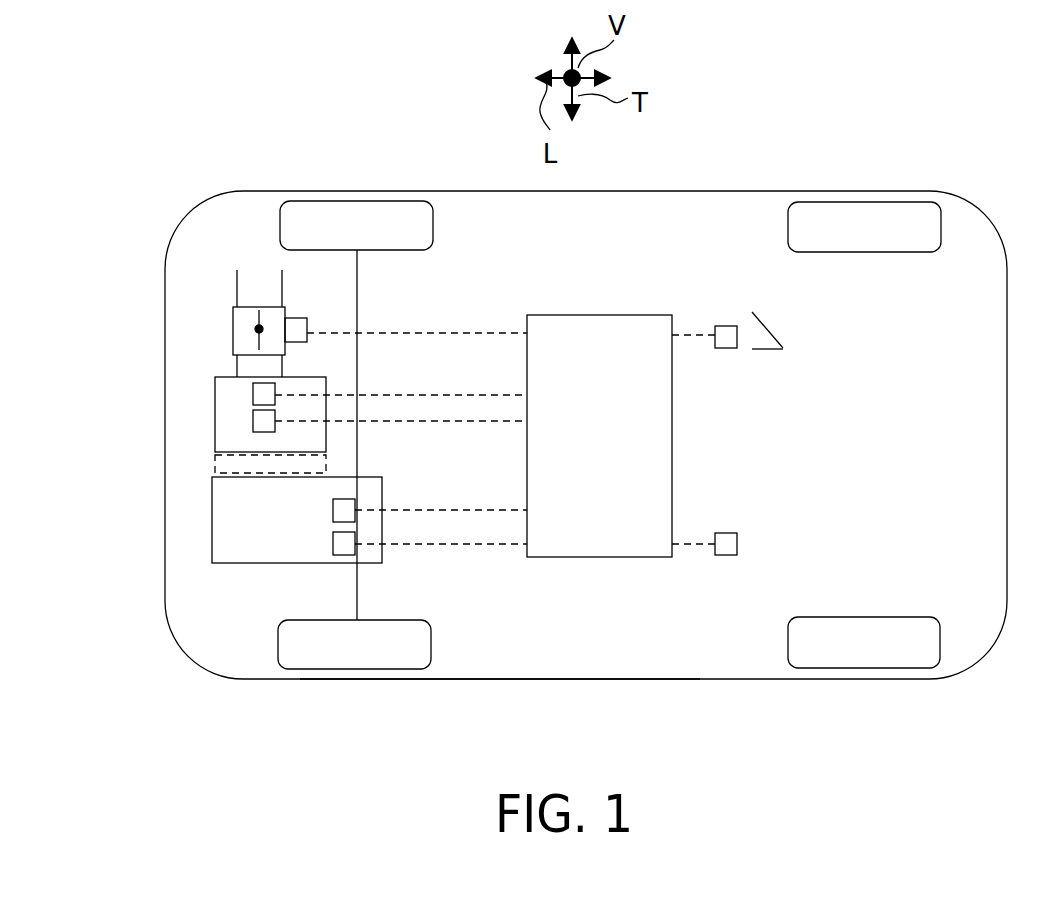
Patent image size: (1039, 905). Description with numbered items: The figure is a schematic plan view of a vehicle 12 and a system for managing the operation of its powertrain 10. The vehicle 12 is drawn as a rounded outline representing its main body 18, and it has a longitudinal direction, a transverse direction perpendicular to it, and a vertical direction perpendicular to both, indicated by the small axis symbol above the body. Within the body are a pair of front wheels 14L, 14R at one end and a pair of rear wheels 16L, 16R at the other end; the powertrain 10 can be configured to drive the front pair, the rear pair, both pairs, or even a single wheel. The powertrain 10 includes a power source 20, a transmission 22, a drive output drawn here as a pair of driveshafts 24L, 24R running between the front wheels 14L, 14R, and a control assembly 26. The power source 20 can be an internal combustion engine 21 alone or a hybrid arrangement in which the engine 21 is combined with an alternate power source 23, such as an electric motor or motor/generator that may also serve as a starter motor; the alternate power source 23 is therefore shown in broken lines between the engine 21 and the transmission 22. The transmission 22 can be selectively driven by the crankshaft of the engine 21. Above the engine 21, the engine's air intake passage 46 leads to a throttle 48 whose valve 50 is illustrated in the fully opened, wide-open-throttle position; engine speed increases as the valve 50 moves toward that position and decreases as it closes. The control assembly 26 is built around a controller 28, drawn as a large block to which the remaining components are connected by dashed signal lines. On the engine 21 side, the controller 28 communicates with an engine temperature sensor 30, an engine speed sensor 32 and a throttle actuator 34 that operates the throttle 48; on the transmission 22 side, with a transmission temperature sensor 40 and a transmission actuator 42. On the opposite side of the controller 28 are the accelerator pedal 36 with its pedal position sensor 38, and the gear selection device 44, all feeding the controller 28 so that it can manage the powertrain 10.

The powertrain 10 is at (242, 582).
The vehicle 12 is at (228, 160).
The front wheel 14R is at (433, 228).
The front wheel 14L is at (431, 645).
The rear wheel 16R is at (788, 228).
The rear wheel 16L is at (788, 648).
The main body 18 is at (455, 680).
The power source 20 is at (342, 451).
The internal combustion engine 21 is at (215, 446).
The transmission 22 is at (212, 521).
The alternate power source 23 is at (215, 472).
The driveshaft 24R is at (357, 365).
The driveshaft 24L is at (357, 597).
The control assembly 26 is at (870, 449).
The controller 28 is at (584, 458).
The engine temperature sensor 30 is at (253, 393).
The engine speed sensor 32 is at (253, 421).
The throttle actuator 34 is at (302, 317).
The accelerator pedal 36 is at (775, 335).
The pedal position sensor 38 is at (733, 348).
The transmission temperature sensor 40 is at (333, 510).
The transmission actuator 42 is at (333, 544).
The gear selection device 44 is at (737, 542).
The air intake passage 46 is at (237, 282).
The throttle 48 is at (233, 325).
The valve 50 is at (259, 333).